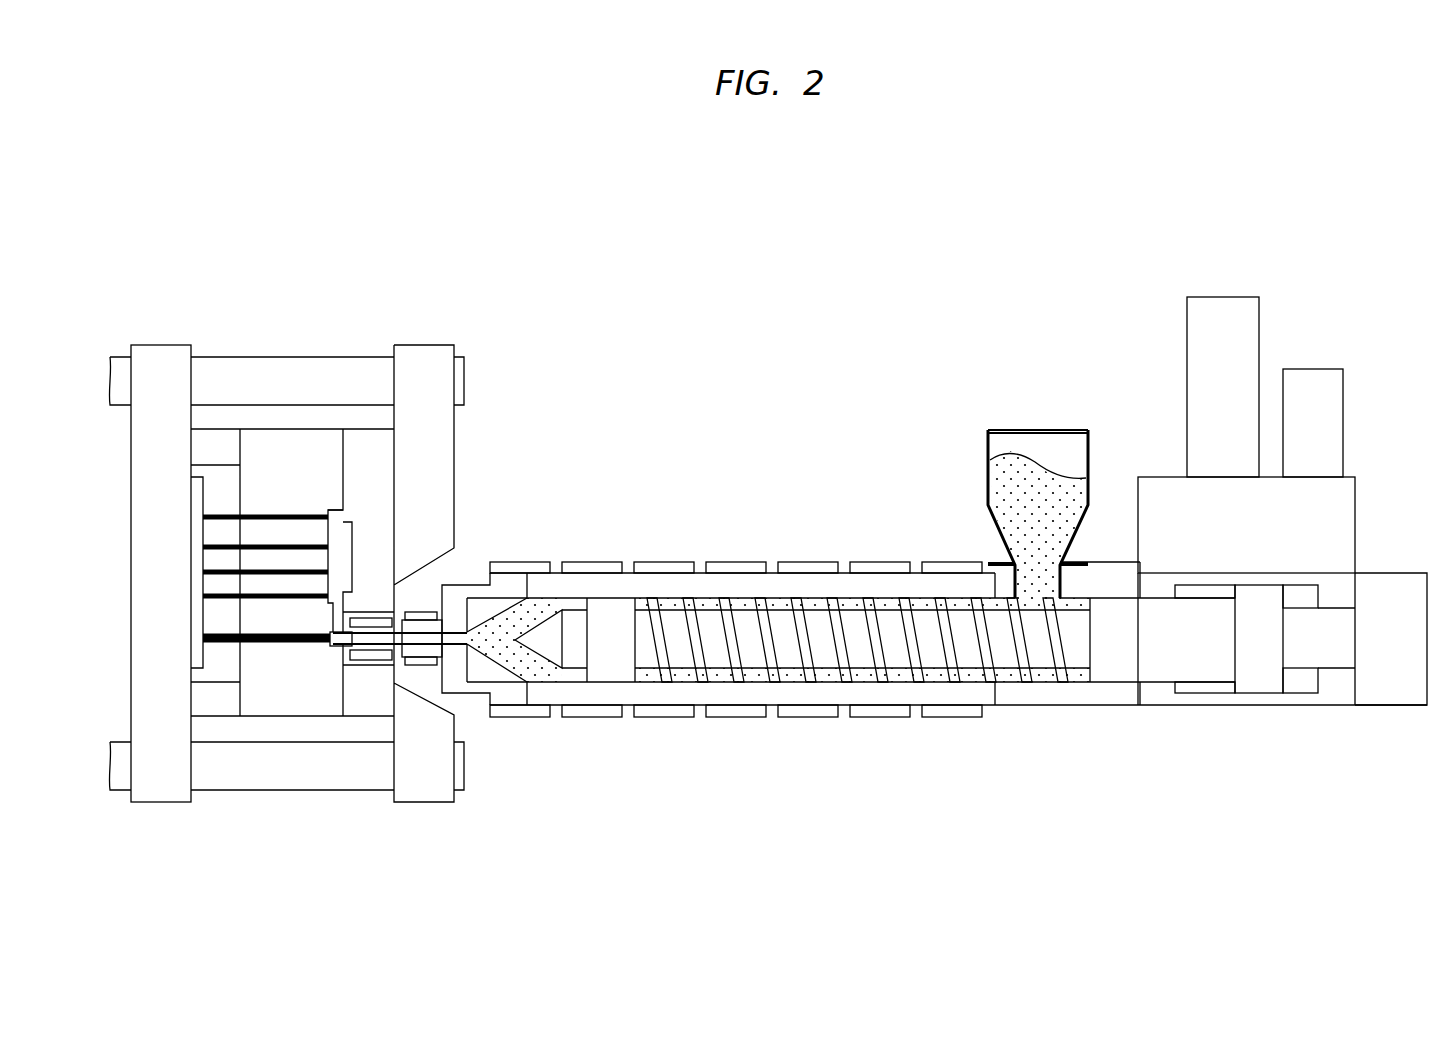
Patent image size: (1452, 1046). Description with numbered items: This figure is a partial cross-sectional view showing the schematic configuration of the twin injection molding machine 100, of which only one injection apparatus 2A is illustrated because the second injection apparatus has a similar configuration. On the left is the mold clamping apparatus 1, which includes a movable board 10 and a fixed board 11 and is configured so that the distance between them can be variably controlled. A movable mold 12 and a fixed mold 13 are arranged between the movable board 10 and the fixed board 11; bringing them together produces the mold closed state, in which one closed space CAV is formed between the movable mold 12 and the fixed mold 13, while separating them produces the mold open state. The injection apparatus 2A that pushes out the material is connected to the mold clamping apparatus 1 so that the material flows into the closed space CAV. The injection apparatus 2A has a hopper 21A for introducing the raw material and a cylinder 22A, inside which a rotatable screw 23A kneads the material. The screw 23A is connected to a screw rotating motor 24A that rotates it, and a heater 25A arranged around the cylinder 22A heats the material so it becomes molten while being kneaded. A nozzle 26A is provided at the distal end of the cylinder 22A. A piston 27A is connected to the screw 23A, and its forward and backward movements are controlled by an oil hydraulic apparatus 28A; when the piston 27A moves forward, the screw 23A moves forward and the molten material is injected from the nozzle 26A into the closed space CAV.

The twin injection molding machine 100 is at (1290, 240).
The mold clamping apparatus 1 is at (390, 240).
The movable board 10 is at (422, 345).
The fixed board 11 is at (167, 345).
The movable mold 12 is at (368, 429).
The fixed mold 13 is at (288, 429).
The closed space CAV is at (333, 582).
The injection apparatus 2A is at (1342, 752).
The hopper 21A is at (988, 452).
The cylinder 22A is at (628, 700).
The screw 23A is at (825, 660).
The screw rotating motor 24A is at (1410, 573).
The heater 25A is at (667, 562).
The nozzle 26A is at (418, 640).
The piston 27A is at (1255, 705).
The oil hydraulic apparatus 28A is at (1150, 476).